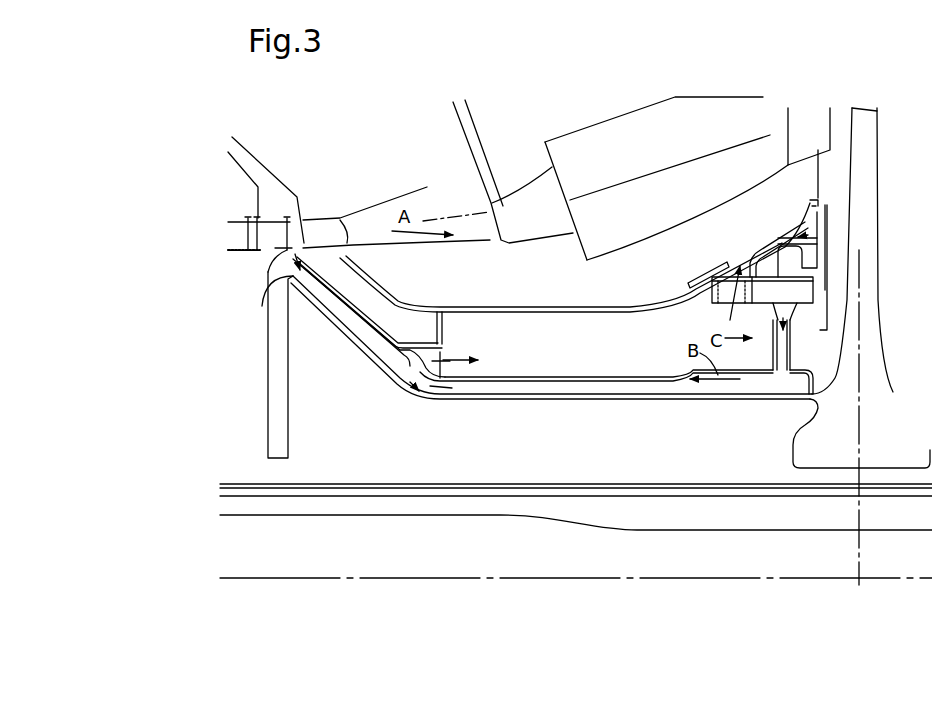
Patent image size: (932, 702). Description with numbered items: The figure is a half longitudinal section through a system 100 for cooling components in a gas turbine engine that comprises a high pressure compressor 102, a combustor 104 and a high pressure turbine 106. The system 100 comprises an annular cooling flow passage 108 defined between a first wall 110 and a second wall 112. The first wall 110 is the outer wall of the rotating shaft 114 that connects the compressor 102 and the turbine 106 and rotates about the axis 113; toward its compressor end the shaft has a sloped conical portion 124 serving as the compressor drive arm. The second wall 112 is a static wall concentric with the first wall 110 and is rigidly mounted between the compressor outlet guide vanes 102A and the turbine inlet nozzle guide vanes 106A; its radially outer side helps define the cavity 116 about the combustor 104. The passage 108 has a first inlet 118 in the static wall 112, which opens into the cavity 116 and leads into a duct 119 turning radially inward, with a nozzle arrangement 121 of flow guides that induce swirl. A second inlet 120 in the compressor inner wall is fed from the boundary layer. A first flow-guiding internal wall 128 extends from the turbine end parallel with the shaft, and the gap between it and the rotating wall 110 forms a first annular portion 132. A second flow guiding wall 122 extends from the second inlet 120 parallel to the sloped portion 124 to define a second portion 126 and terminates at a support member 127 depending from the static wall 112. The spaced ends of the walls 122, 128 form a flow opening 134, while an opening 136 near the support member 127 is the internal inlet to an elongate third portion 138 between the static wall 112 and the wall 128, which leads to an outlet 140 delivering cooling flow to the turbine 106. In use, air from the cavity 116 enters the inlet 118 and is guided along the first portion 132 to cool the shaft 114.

The system for cooling components 100 is at (262, 113).
The high pressure compressor 102 is at (299, 188).
The compressor outlet guide vanes 102A is at (328, 223).
The combustor 104 is at (605, 143).
The high pressure turbine 106 is at (872, 112).
The turbine inlet nozzle guide vanes 106A is at (808, 122).
The annular cooling flow passage 108 is at (525, 357).
The first wall 110 is at (600, 399).
The second wall 112 is at (622, 320).
The axis 113 is at (255, 578).
The rotating shaft 114 is at (433, 411).
The cavity 116 is at (541, 289).
The first inlet 118 is at (704, 289).
The duct 119 is at (760, 290).
The second inlet 120 is at (286, 262).
The nozzle arrangement 121 is at (787, 350).
The second flow guiding wall 122 is at (317, 283).
The conical portion 124 is at (338, 318).
The second portion 126 is at (353, 320).
The support member 127 is at (443, 307).
The first flow-guiding internal wall 128 is at (555, 379).
The first annular portion 132 is at (620, 389).
The flow opening 134 is at (400, 352).
The opening 136 is at (445, 352).
The third portion 138 is at (598, 356).
The outlet 140 is at (732, 290).